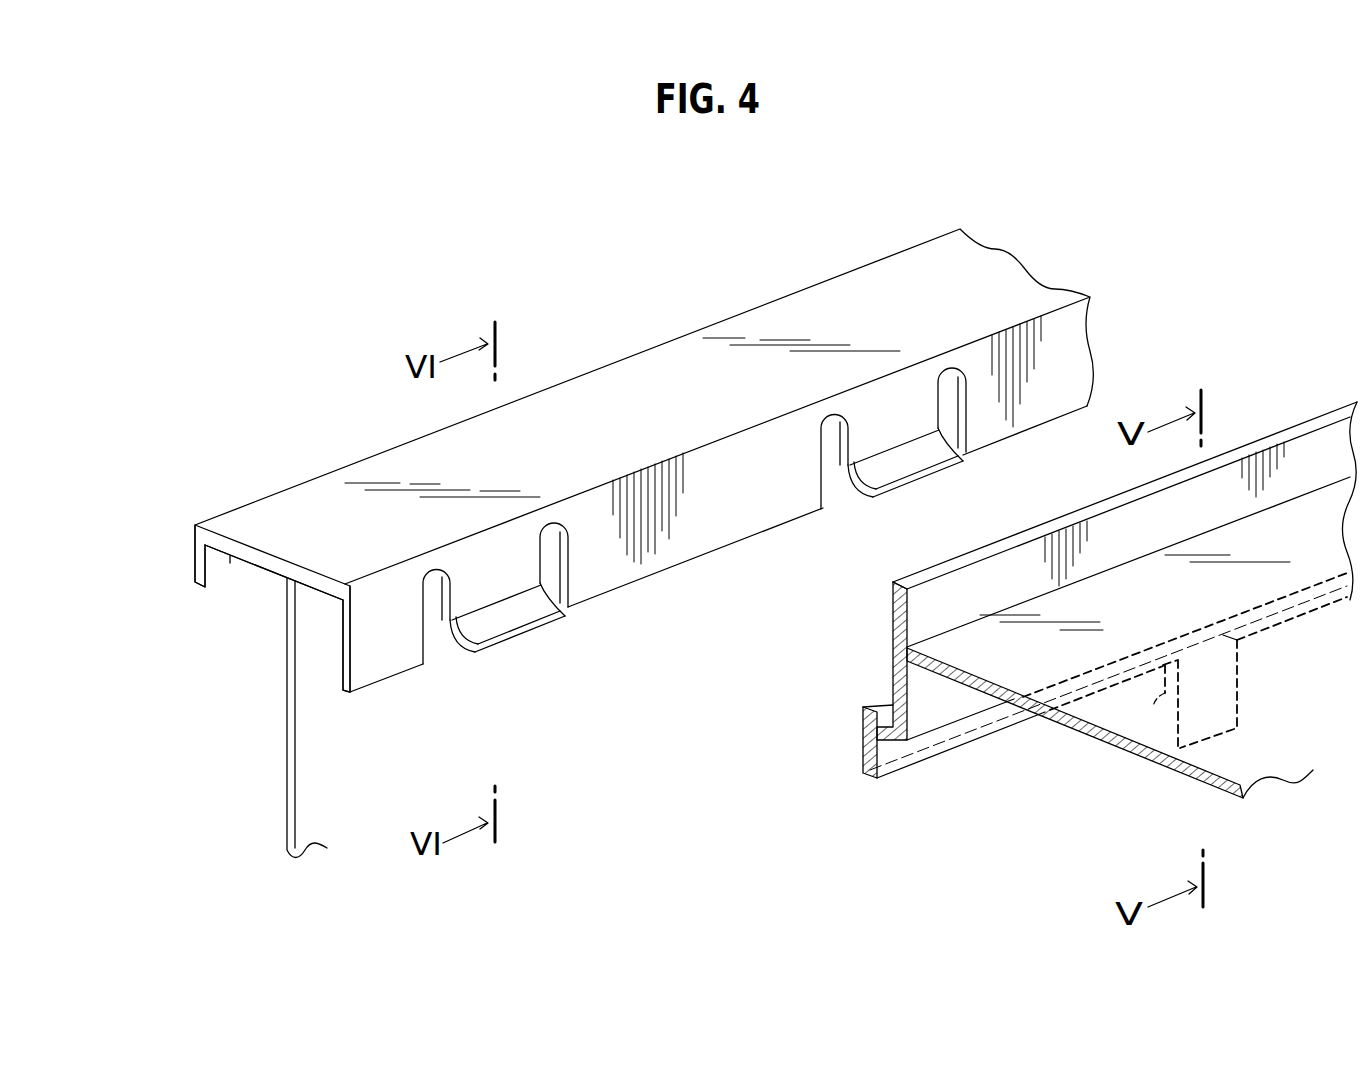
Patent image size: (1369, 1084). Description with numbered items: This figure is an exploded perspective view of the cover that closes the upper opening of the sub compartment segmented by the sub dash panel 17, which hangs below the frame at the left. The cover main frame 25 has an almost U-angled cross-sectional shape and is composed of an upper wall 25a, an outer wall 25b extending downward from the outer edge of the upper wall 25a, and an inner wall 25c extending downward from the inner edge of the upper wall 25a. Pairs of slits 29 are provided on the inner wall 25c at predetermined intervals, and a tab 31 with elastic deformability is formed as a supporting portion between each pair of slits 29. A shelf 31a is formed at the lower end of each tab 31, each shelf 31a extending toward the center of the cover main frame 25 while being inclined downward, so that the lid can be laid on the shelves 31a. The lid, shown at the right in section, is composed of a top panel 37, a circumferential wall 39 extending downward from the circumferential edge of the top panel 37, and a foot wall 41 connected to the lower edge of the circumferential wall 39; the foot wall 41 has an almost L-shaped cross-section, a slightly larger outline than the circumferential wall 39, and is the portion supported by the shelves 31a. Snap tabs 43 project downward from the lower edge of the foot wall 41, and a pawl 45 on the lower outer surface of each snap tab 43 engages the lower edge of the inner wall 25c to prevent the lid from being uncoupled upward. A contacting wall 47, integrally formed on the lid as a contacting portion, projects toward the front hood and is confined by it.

The sub dash panel 17 is at (290, 776).
The cover main frame 25 is at (571, 492).
The upper wall 25a is at (267, 560).
The outer wall 25b is at (197, 558).
The inner wall 25c is at (342, 652).
The slits 29 is at (428, 615).
The tab 31 is at (482, 572).
The shelf 31a is at (510, 617).
The top panel 37 is at (965, 686).
The circumferential wall 39 is at (893, 677).
The foot wall 41 is at (863, 743).
The snap tab 43 is at (1153, 707).
The pawl 45 is at (1150, 707).
The contacting wall 47 is at (892, 596).